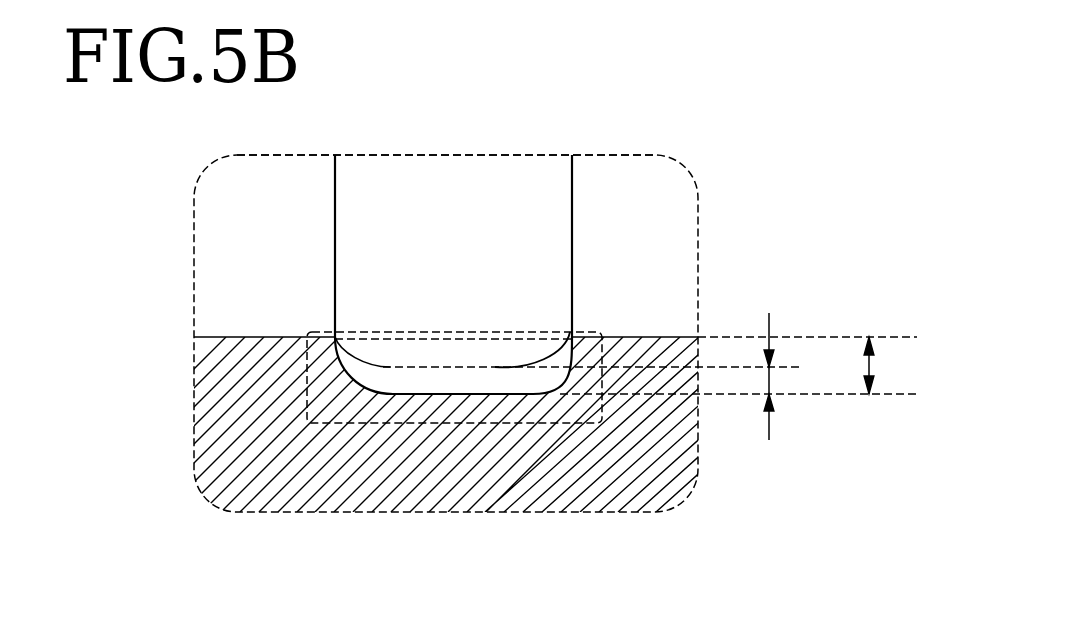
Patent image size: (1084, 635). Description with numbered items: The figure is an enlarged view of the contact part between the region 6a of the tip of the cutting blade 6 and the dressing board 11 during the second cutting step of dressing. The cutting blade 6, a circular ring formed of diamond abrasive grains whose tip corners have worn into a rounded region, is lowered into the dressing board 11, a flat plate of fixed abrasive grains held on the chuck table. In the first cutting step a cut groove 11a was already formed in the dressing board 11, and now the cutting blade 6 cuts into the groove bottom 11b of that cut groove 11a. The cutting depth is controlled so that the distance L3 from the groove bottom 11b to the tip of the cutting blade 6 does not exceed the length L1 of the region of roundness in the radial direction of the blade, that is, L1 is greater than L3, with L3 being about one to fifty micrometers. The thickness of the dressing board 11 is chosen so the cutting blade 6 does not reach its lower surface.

The cutting blade 6 is at (448, 173).
The region of the tip of the cutting blade 6a is at (697, 228).
The dressing board 11 is at (463, 482).
The cut groove 11a is at (320, 332).
The groove bottom 11b is at (495, 367).
The length of the region of roundness L1 is at (888, 365).
The distance from the groove bottom to the tip of the cutting blade L3 is at (769, 377).